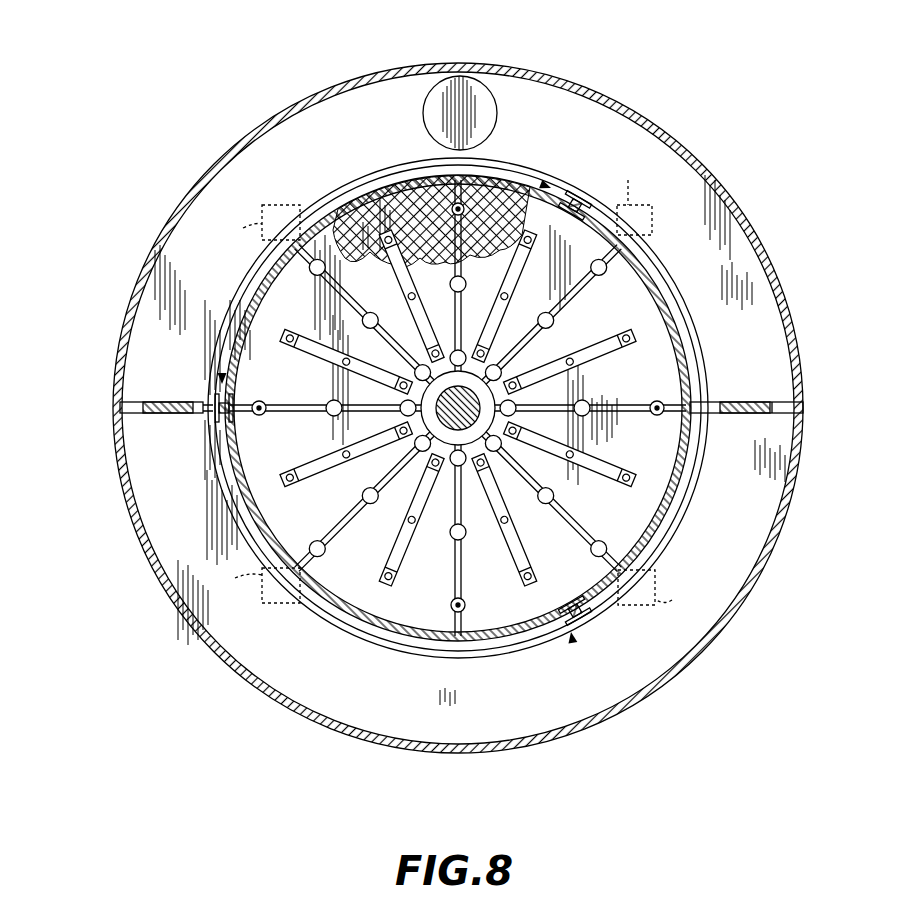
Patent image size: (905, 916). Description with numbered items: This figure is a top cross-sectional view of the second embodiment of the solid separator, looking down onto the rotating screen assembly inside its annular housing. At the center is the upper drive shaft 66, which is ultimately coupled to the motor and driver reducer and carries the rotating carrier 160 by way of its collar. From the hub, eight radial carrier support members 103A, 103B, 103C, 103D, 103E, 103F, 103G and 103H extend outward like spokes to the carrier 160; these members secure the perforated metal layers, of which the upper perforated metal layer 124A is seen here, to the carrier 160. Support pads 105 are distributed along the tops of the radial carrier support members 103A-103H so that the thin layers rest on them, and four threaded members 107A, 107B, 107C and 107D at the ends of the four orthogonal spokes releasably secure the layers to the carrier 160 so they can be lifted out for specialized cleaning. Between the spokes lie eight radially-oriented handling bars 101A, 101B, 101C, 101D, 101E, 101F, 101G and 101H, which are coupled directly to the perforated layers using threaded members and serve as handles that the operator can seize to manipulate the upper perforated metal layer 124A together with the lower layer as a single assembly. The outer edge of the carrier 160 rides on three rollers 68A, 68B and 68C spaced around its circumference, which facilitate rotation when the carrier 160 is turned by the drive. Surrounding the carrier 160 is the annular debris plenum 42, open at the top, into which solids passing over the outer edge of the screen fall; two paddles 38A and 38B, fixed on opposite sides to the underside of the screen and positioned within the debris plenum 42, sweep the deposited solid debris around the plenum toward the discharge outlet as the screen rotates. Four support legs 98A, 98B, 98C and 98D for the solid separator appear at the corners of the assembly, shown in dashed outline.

The annular debris plenum 42 is at (470, 78).
The upper perforated metal layer 124A is at (247, 154).
The carrier 160 is at (527, 408).
The upper drive shaft 66 is at (432, 375).
The paddle 38A is at (150, 400).
The paddle 38B is at (800, 414).
The radial carrier support member 103A is at (636, 398).
The radial carrier support member 103B is at (598, 540).
The radial carrier support member 103C is at (466, 592).
The radial carrier support member 103D is at (325, 600).
The radial carrier support member 103E is at (300, 416).
The radial carrier support member 103F is at (312, 262).
The radial carrier support member 103G is at (452, 238).
The radial carrier support member 103H is at (582, 284).
The radially-oriented handling bar 101A is at (640, 338).
The radially-oriented handling bar 101B is at (636, 483).
The radially-oriented handling bar 101C is at (588, 610).
The radially-oriented handling bar 101D is at (390, 620).
The radially-oriented handling bar 101E is at (285, 484).
The radially-oriented handling bar 101F is at (233, 396).
The radially-oriented handling bar 101G is at (362, 232).
The radially-oriented handling bar 101H is at (528, 234).
The support pad 105 is at (553, 318).
The threaded member 107A is at (662, 414).
The threaded member 107B is at (466, 608).
The threaded member 107C is at (256, 412).
The threaded member 107D is at (455, 204).
The roller 68A is at (543, 183).
The roller 68B is at (222, 374).
The roller 68C is at (573, 642).
The support leg 98A is at (242, 222).
The support leg 98B is at (623, 192).
The support leg 98C is at (237, 579).
The support leg 98D is at (673, 591).